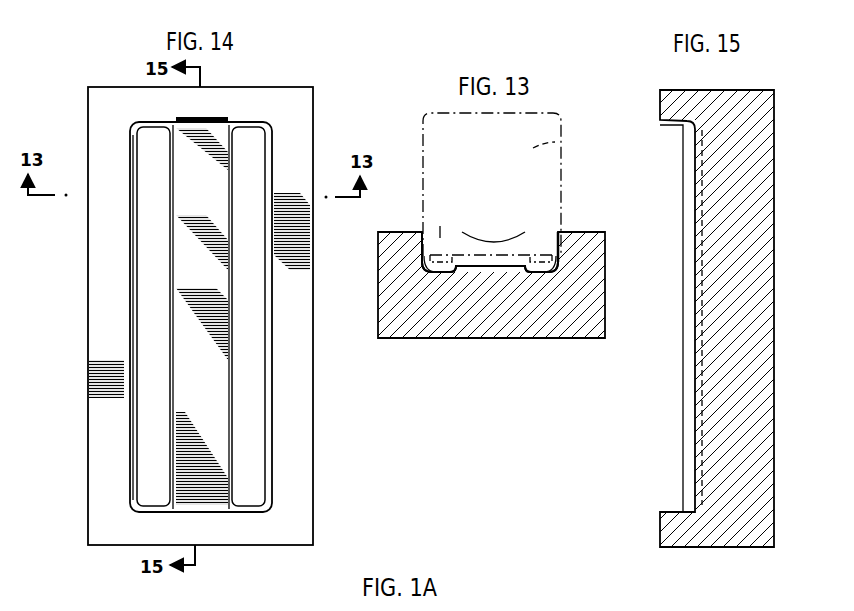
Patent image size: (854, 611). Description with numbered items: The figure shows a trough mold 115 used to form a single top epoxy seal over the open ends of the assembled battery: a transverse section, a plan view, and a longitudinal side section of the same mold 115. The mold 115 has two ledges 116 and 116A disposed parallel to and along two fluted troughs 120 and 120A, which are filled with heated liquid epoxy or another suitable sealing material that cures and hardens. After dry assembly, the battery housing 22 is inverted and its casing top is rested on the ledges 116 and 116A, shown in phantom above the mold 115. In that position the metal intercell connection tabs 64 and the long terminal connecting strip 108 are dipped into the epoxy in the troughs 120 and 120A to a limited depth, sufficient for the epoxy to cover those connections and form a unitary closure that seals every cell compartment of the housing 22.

In FIG. 13, the battery housing 22 is at (562, 137).
In FIG. 13, the extending tab 64 is at (441, 224).
In FIG. 13, the connecting strip 108 is at (539, 228).
In FIG. 14, the mold 115 is at (311, 488).
In FIG. 13, the mold 115 is at (518, 338).
In FIG. 15, the mold 115 is at (748, 463).
In FIG. 14, the ledge 116 is at (270, 458).
In FIG. 13, the ledge 116 is at (421, 256).
In FIG. 14, the ledge 116A is at (134, 462).
In FIG. 13, the ledge 116A is at (561, 246).
In FIG. 14, the fluted trough 120 is at (154, 432).
In FIG. 13, the fluted trough 120 is at (440, 273).
In FIG. 15, the fluted trough 120 is at (668, 392).
In FIG. 14, the fluted trough 120A is at (254, 418).
In FIG. 13, the fluted trough 120A is at (545, 273).